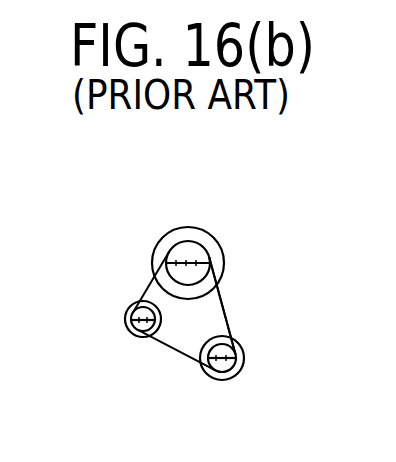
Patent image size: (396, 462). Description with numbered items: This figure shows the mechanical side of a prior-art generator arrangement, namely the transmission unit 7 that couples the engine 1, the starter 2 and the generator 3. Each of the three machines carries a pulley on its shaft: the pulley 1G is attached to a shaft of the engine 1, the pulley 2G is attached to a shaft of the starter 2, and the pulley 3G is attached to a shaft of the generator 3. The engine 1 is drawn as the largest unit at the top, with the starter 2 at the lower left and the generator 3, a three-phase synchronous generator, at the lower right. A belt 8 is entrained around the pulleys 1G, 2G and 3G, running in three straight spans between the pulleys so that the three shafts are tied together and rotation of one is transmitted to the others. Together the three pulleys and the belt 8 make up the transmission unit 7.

The engine 1 is at (165, 237).
The pulley 1G is at (196, 243).
The starter 2 is at (127, 313).
The pulley 2G is at (131, 322).
The generator 3 is at (225, 381).
The pulley 3G is at (236, 359).
The transmission unit 7 is at (225, 300).
The belt 8 is at (228, 325).